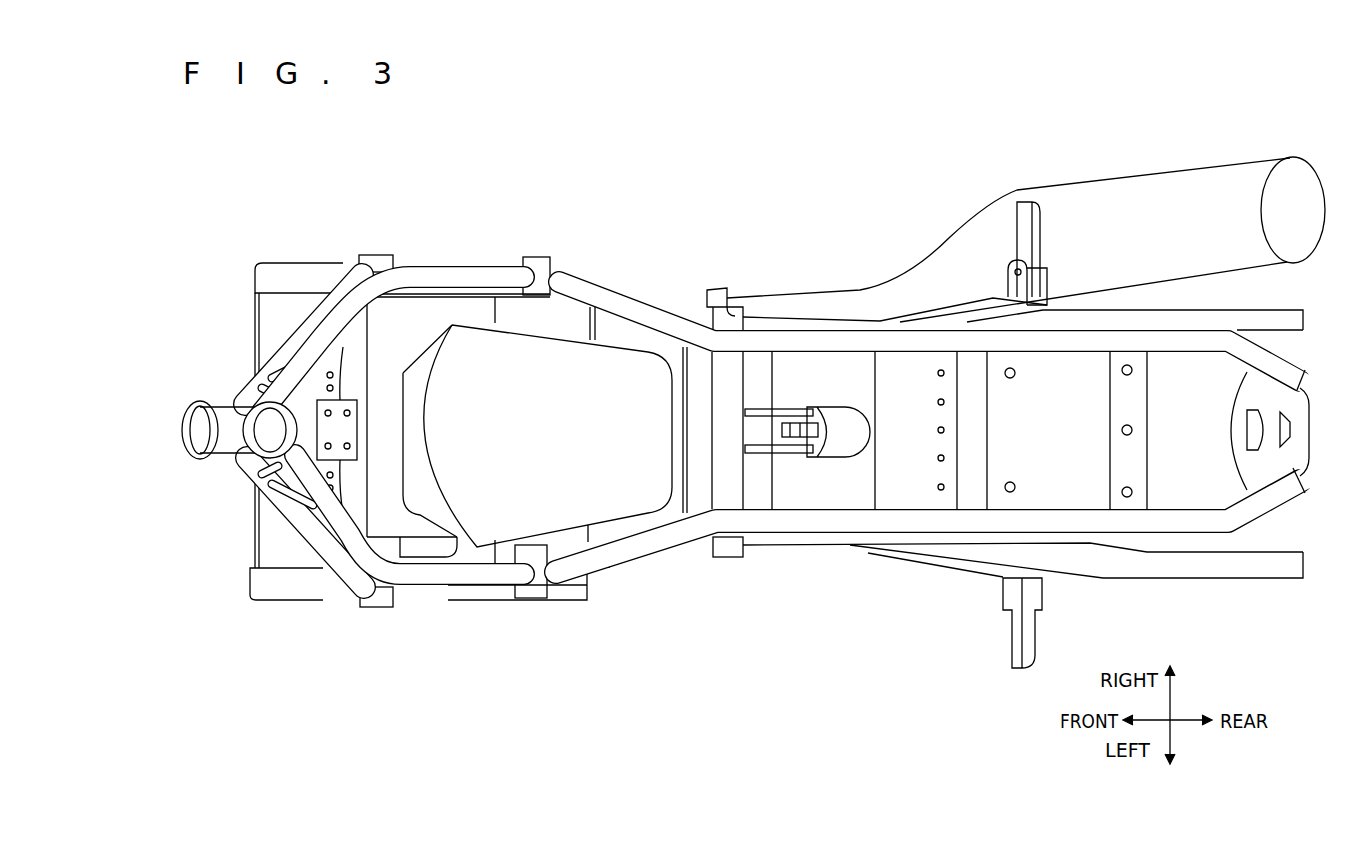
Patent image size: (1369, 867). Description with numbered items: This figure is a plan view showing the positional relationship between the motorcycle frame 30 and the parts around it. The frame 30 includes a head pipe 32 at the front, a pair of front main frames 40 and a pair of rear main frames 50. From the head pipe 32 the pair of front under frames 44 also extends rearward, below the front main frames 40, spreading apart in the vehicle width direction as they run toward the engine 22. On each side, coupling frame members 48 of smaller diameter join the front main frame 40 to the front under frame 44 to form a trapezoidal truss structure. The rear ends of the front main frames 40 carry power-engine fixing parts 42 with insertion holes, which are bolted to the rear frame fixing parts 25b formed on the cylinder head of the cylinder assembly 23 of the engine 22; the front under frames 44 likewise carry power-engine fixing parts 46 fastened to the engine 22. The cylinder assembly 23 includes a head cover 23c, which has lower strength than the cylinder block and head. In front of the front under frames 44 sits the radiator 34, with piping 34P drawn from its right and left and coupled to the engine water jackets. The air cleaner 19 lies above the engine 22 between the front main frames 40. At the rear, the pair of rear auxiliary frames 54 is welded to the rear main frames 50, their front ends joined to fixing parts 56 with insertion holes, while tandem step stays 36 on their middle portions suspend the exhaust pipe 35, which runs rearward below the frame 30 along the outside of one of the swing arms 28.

The air cleaner 19 is at (600, 335).
The engine 22 is at (650, 540).
The cylinder assembly 23 is at (425, 318).
The head cover 23c is at (380, 333).
The rear frame fixing parts 25b is at (537, 290).
The swing arms 28 is at (1262, 310).
The motorcycle frame 30 is at (758, 410).
The head pipe 32 is at (207, 418).
The radiator 34 is at (258, 310).
The piping 34P is at (273, 272).
The exhaust pipe 35 is at (835, 290).
The tandem step stays 36 is at (992, 297).
The front main frames 40 is at (407, 280).
The power-engine fixing parts 42 is at (541, 257).
The front under frames 44 is at (242, 385).
The power-engine fixing parts 46 is at (373, 255).
The coupling frame members 48 is at (262, 386).
The rear main frames 50 is at (790, 317).
The rear auxiliary frames 54 is at (872, 320).
The fixing parts 56 is at (715, 290).